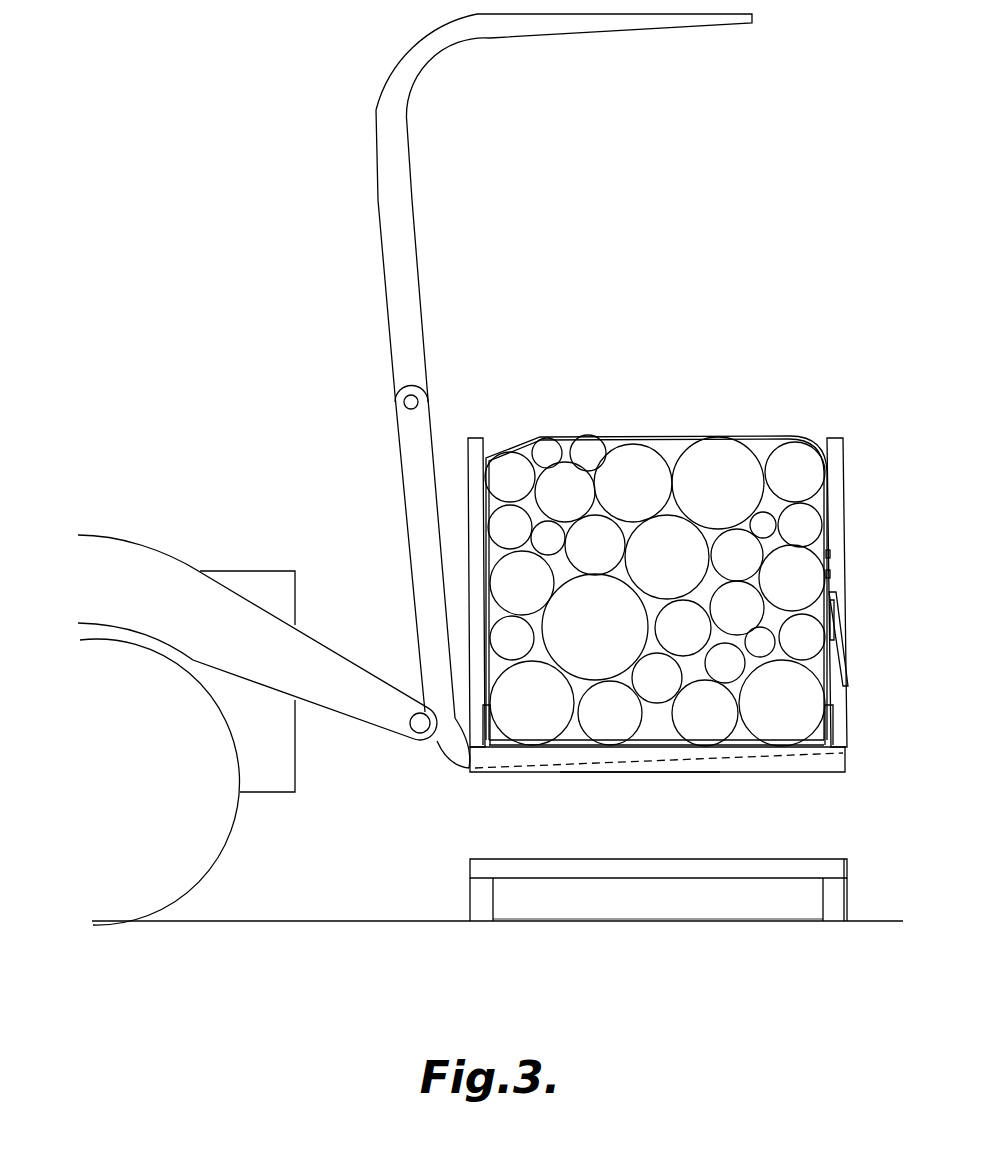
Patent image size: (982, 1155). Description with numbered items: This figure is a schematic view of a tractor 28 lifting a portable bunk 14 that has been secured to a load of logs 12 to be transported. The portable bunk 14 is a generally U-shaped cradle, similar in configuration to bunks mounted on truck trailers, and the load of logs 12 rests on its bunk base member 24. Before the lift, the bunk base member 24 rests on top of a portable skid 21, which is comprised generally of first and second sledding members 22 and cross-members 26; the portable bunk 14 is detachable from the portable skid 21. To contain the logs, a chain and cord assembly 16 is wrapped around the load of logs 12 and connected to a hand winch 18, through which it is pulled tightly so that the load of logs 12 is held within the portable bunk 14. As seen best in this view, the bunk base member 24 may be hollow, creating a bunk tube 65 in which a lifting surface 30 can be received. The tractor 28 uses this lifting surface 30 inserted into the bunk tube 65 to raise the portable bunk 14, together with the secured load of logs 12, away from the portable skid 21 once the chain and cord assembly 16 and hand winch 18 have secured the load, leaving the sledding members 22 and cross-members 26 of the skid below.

The load of logs 12 is at (725, 459).
The portable bunk 14 is at (845, 542).
The chain and cord assembly 16 is at (645, 436).
The hand winch 18 is at (848, 661).
The portable skid 21 is at (627, 889).
The sledding members 22 is at (838, 895).
The bunk base member 24 is at (830, 760).
The cross-members 26 is at (668, 865).
The tractor 28 is at (152, 550).
The lifting surface 30 is at (755, 756).
The bunk tube 65 is at (642, 774).